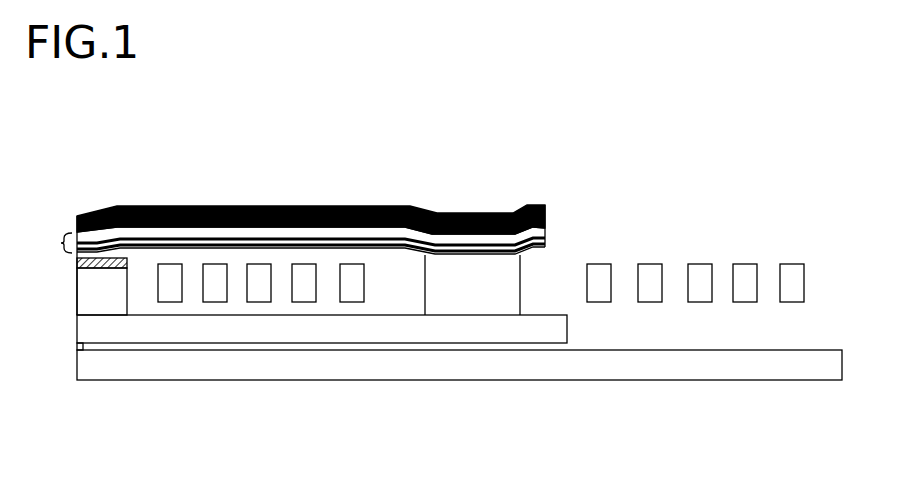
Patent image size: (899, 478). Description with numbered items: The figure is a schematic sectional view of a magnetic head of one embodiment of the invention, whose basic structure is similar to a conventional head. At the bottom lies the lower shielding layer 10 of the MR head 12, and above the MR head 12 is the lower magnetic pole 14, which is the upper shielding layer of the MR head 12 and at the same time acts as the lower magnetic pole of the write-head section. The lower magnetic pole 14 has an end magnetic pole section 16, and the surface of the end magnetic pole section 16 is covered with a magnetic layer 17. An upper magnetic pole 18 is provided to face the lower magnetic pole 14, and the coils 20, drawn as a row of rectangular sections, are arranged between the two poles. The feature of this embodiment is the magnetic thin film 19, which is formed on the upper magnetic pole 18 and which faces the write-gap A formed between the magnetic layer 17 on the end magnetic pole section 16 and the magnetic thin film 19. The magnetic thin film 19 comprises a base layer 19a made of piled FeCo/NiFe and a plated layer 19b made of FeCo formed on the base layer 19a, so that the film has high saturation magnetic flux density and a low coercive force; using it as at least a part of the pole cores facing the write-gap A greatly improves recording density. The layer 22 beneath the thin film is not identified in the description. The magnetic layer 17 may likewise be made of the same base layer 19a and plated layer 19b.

The lower shielding layer 10 is at (448, 372).
The MR head 12 is at (82, 350).
The lower magnetic pole 14 is at (322, 332).
The end magnetic pole section 16 is at (105, 295).
The magnetic layer 17 is at (95, 268).
The upper magnetic pole 18 is at (338, 205).
The magnetic thin film 19 is at (185, 100).
The base layer 19a is at (152, 243).
The plated layer 19b is at (117, 205).
The coils 20 is at (350, 277).
The organic light emitting layer 22 is at (240, 257).
The write-gap A is at (73, 255).